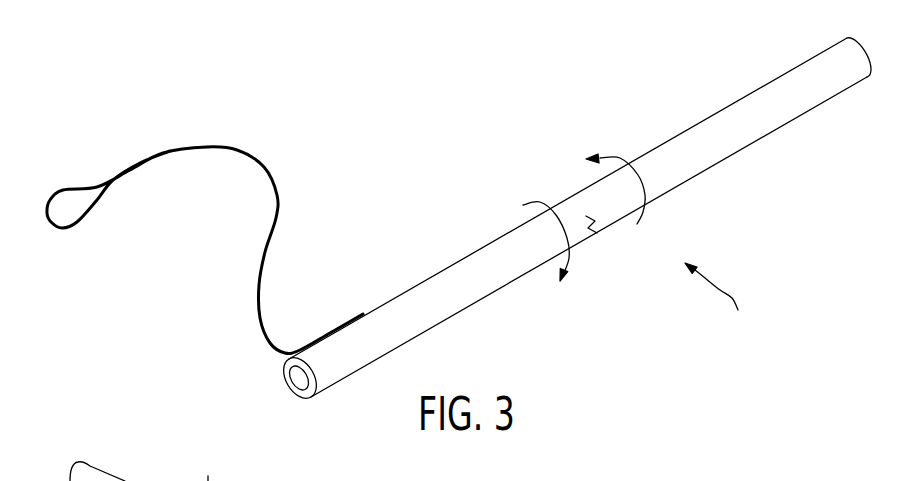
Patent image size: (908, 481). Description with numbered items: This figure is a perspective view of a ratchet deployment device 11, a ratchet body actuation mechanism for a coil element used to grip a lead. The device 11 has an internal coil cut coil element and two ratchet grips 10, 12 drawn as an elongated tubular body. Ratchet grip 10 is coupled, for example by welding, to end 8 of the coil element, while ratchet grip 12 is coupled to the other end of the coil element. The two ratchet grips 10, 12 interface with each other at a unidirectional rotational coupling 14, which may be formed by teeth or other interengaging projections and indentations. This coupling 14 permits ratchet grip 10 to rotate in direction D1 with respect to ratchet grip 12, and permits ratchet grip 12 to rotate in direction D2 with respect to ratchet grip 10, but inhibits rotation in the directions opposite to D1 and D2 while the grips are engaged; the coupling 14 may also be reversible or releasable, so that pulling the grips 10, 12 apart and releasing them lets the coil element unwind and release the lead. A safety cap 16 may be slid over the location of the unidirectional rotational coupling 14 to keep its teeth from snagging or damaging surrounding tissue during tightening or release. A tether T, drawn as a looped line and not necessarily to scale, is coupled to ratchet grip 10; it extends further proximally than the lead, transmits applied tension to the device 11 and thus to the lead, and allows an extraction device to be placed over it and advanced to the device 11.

The ratchet grip 10 is at (505, 248).
The ratchet deployment device 11 is at (714, 301).
The ratchet grip 12 is at (690, 142).
The unidirectional rotational coupling 14 is at (586, 216).
The direction D1 is at (554, 210).
The direction D2 is at (650, 194).
The tether T is at (258, 160).
The safety cap 16 is at (97, 467).
The end of coil element 8 is at (209, 464).